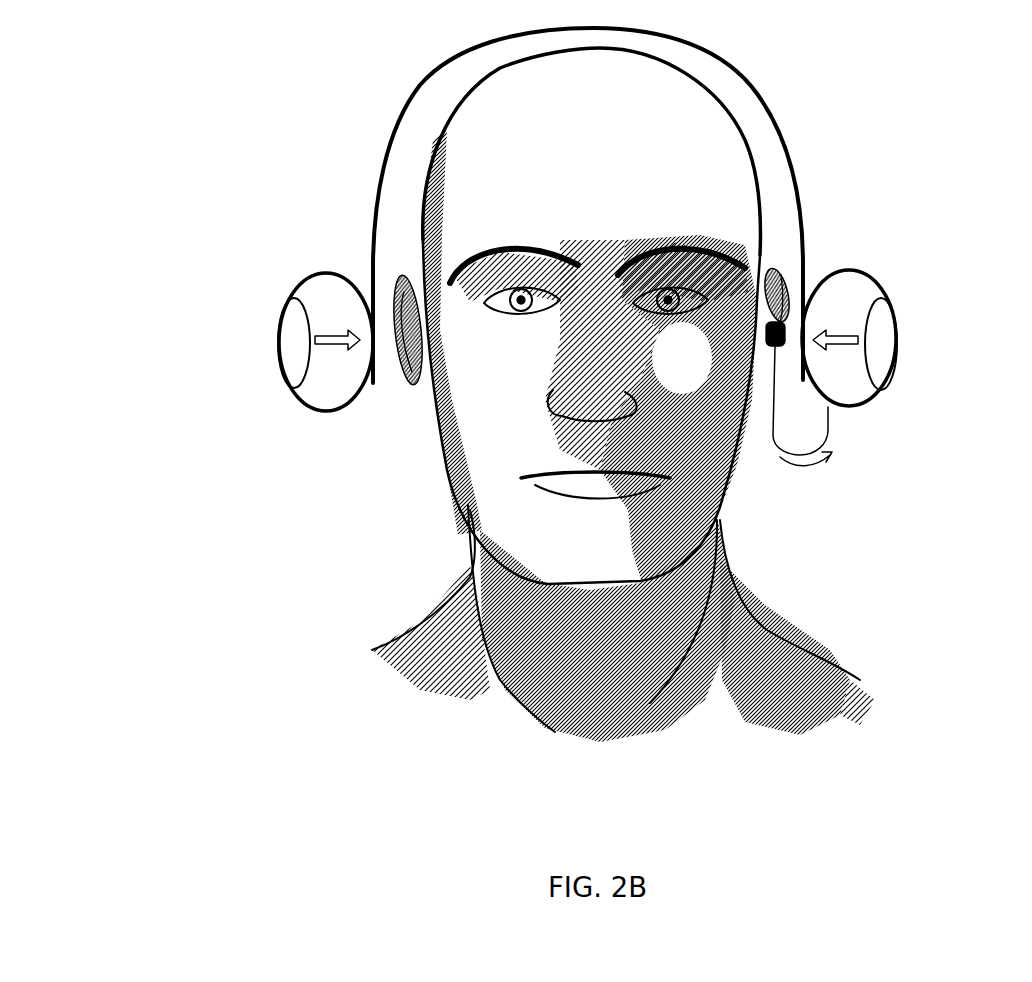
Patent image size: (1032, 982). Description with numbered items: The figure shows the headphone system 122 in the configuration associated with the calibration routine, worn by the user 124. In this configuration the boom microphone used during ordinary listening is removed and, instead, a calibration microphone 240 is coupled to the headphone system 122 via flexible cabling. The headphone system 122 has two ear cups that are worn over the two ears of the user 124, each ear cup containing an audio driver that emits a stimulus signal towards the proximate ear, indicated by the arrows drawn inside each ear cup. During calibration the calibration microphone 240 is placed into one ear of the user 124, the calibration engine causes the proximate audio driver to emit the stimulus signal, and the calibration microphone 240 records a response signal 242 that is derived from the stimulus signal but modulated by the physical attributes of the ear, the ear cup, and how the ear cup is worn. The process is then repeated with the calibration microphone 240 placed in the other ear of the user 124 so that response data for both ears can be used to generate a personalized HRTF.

The headphone system 122 is at (428, 80).
The user 124 is at (410, 633).
The calibration microphone 240 is at (788, 318).
The response signal 242 is at (800, 467).